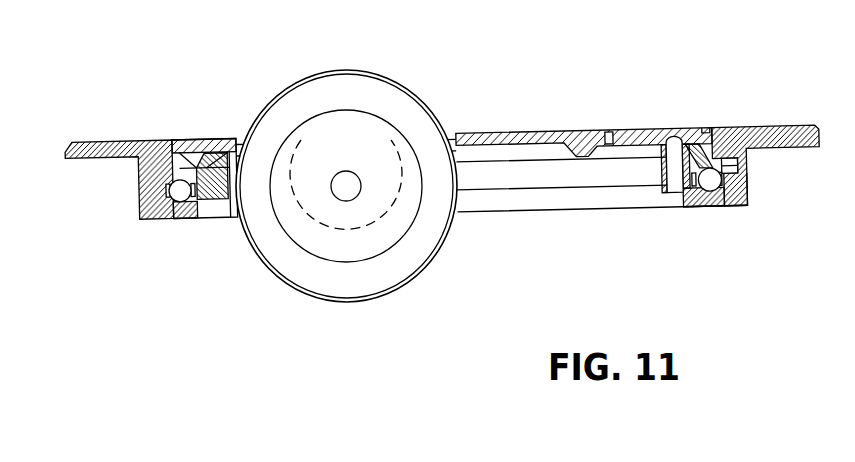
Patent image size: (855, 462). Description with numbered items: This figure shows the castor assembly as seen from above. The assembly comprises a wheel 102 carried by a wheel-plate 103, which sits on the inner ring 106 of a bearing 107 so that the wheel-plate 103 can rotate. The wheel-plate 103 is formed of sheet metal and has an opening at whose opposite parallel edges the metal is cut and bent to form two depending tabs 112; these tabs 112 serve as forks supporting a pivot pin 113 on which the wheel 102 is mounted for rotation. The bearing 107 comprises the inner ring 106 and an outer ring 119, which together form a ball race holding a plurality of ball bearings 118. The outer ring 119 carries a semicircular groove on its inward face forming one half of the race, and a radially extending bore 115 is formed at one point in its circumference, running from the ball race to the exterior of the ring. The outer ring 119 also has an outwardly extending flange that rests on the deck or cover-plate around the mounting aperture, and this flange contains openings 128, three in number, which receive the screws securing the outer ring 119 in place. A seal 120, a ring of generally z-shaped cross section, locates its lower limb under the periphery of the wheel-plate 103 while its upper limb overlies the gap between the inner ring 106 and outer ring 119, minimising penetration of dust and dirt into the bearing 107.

The wheel 102 is at (410, 273).
The wheel-plate 103 is at (497, 140).
The inner ring 106 is at (690, 198).
The bearing 107 is at (707, 129).
The depending tabs 112 is at (420, 235).
The pivot pin 113 is at (340, 194).
The radially extending bore 115 is at (750, 184).
The ball bearings 118 is at (750, 174).
The outer ring 119 is at (724, 131).
The seal 120 is at (184, 140).
The openings 128 is at (100, 140).